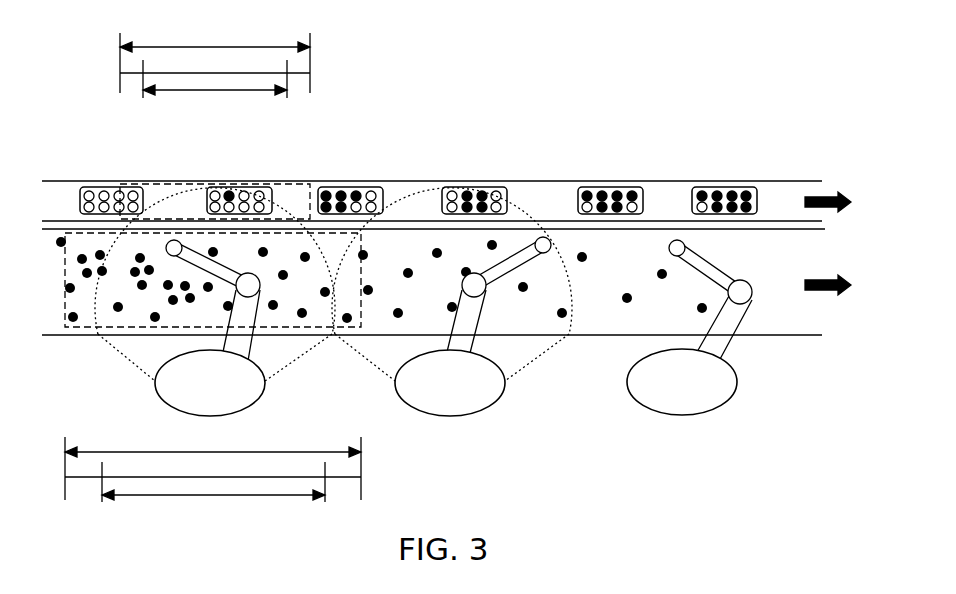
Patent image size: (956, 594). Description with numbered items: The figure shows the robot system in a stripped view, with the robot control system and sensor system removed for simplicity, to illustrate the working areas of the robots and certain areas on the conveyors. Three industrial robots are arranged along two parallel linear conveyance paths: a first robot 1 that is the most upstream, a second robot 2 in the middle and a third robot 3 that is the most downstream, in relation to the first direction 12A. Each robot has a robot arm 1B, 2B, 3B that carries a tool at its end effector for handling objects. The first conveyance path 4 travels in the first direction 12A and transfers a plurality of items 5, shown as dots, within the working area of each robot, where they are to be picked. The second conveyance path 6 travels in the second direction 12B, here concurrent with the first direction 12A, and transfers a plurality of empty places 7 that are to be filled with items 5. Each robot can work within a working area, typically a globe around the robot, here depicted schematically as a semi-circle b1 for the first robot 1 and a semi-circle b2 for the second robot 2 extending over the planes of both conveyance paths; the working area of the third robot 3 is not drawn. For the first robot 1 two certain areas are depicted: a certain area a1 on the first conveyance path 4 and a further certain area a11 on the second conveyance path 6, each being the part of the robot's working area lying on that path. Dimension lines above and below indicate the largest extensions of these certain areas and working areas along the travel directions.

The first robot 1 is at (227, 328).
The second robot 2 is at (473, 326).
The third robot 3 is at (705, 327).
The robot arm 1B is at (240, 338).
The robot arm 2B is at (467, 343).
The robot arm 3B is at (718, 345).
The first conveyance path 4 is at (807, 337).
The item 5 is at (363, 287).
The second conveyance path 6 is at (528, 182).
The empty place 7 is at (258, 192).
The first direction 12A is at (832, 291).
The second direction 12B is at (832, 208).
The certain area a1 is at (63, 315).
The further certain area a11 is at (118, 184).
The working area b1 is at (138, 364).
The working area b2 is at (374, 376).